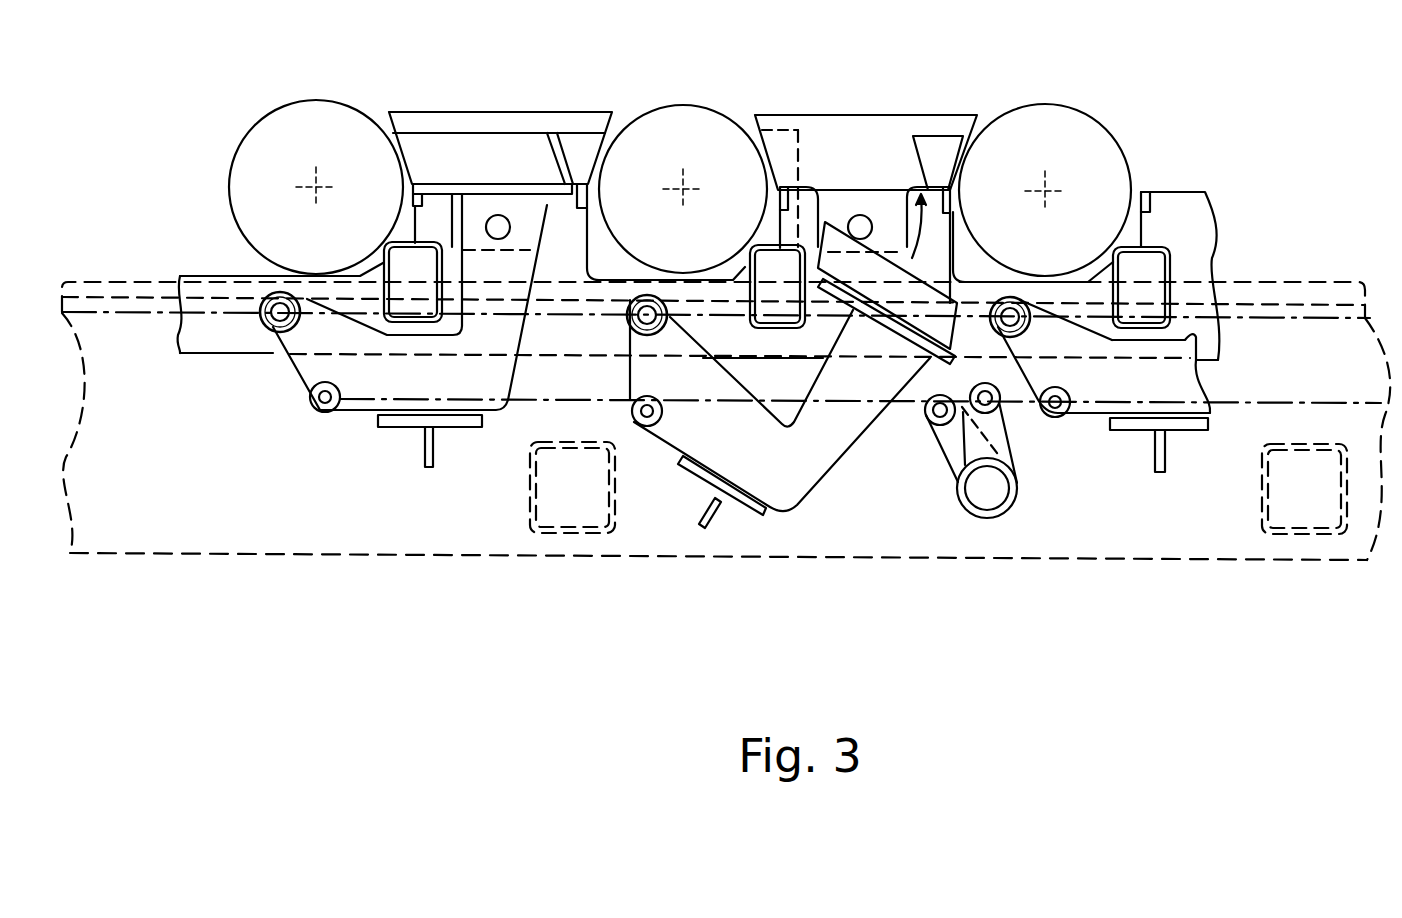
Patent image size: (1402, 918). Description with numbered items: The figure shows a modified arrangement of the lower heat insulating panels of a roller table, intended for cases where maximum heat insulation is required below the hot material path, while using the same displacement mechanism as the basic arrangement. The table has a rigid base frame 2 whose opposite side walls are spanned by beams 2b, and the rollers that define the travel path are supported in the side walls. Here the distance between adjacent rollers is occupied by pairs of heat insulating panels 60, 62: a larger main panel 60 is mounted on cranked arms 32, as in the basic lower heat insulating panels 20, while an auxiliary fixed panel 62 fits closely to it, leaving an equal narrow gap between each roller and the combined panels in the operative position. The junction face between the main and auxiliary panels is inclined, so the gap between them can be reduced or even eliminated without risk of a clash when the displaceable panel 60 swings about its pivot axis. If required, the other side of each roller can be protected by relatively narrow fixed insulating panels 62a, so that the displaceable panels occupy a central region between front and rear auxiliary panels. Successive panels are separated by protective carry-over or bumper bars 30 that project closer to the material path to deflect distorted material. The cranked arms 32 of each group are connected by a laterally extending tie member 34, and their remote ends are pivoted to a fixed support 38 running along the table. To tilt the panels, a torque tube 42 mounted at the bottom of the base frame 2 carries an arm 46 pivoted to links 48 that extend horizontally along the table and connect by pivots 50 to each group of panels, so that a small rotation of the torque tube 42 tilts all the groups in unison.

The base frame 2 is at (163, 423).
The beams 2b is at (402, 242).
The lower heat insulating panels 20 is at (1085, 138).
The protective carry-over or bumper bars 30 is at (857, 127).
The cranked arms 32 is at (300, 370).
The tie member 34 is at (440, 457).
The fixed support 38 is at (1207, 327).
The torque tube 42 is at (1013, 488).
The arm 46 is at (945, 445).
The links 48 is at (618, 400).
The pivots 50 is at (320, 413).
The main heat insulating panel 60 is at (488, 145).
The auxiliary fixed panel 62 is at (580, 143).
The narrow fixed insulating panels 62a is at (773, 130).